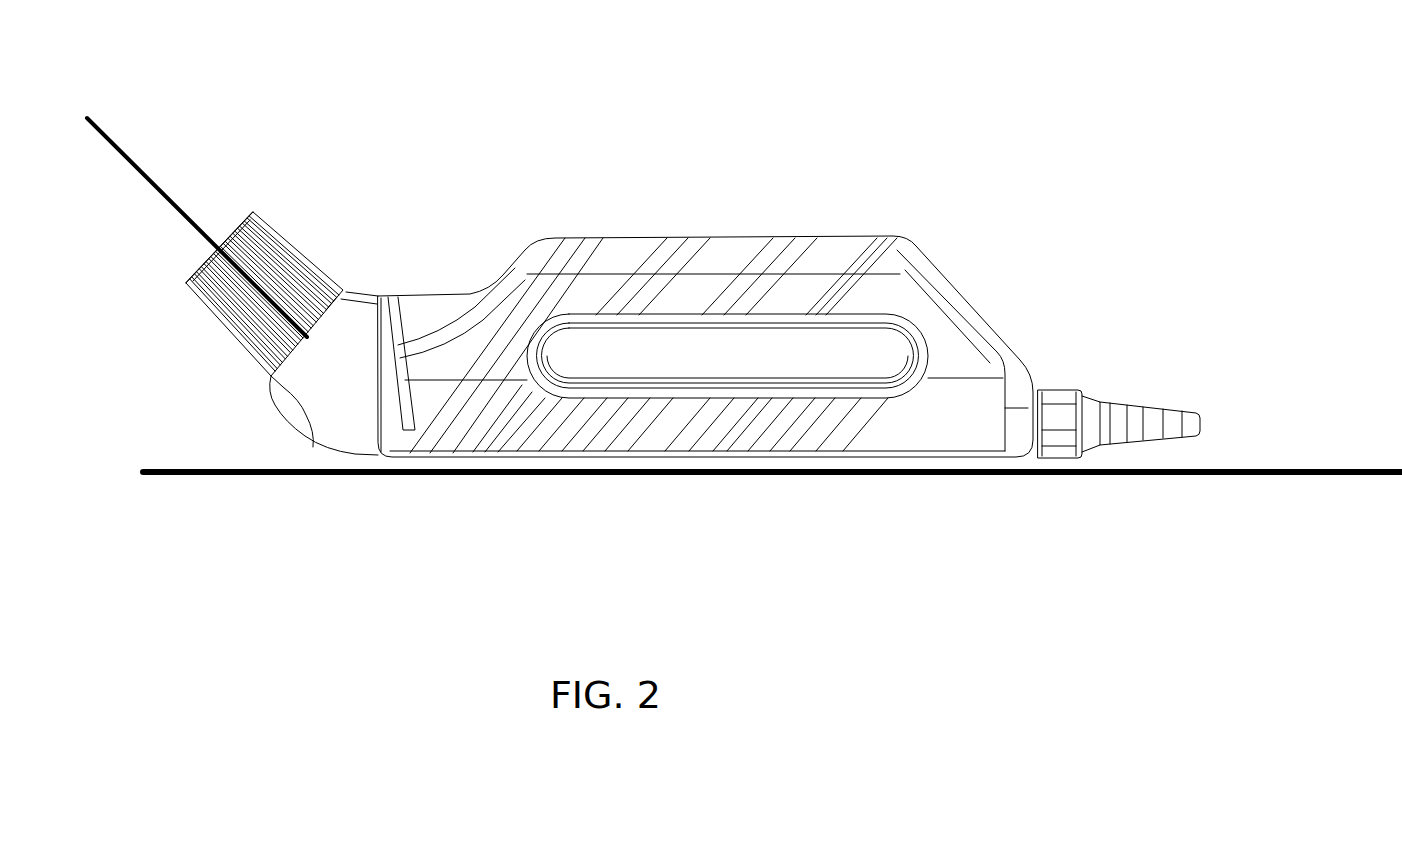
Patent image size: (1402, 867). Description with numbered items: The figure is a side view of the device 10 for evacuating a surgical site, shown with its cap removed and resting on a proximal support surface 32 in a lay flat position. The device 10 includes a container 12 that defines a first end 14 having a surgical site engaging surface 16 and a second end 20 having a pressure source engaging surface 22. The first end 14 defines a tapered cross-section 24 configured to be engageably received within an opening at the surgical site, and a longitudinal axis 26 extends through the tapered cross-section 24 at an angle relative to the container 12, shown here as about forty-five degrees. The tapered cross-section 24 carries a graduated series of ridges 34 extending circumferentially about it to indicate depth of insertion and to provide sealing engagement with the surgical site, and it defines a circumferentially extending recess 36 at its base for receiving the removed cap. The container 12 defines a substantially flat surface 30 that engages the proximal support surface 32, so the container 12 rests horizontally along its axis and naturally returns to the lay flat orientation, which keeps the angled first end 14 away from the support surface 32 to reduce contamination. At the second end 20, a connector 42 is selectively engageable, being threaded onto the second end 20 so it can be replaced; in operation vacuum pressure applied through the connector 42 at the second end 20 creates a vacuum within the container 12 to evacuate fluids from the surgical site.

The device 10 is at (878, 78).
The container 12 is at (576, 246).
The first end 14 is at (223, 358).
The surgical site engaging surface 16 is at (335, 278).
The second end 20 is at (1033, 487).
The pressure source engaging surface 22 is at (1068, 386).
The tapered cross-section 24 is at (190, 305).
The longitudinal axis 26 is at (131, 188).
The substantially flat surface 30 is at (742, 463).
The proximal support surface 32 is at (388, 487).
The graduated series of ridges 34 is at (298, 240).
The circumferentially extending recess 36 is at (346, 283).
The connector 42 is at (1138, 418).